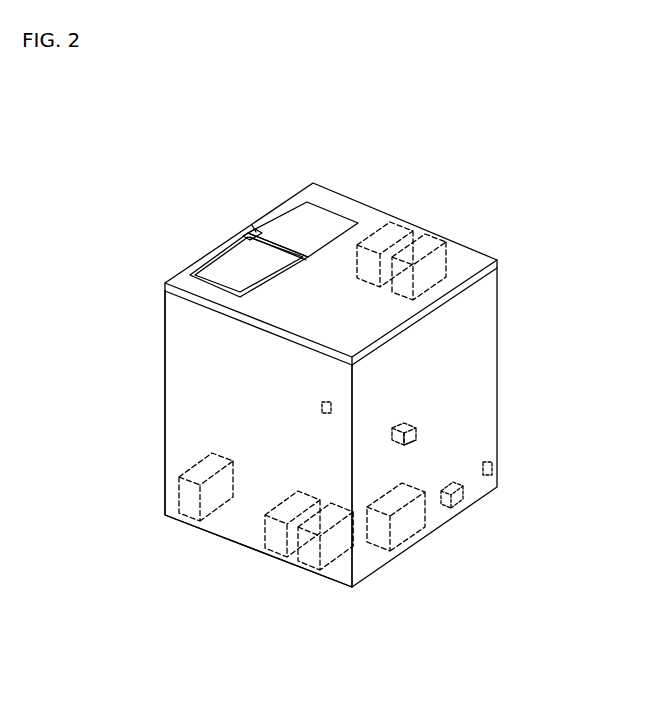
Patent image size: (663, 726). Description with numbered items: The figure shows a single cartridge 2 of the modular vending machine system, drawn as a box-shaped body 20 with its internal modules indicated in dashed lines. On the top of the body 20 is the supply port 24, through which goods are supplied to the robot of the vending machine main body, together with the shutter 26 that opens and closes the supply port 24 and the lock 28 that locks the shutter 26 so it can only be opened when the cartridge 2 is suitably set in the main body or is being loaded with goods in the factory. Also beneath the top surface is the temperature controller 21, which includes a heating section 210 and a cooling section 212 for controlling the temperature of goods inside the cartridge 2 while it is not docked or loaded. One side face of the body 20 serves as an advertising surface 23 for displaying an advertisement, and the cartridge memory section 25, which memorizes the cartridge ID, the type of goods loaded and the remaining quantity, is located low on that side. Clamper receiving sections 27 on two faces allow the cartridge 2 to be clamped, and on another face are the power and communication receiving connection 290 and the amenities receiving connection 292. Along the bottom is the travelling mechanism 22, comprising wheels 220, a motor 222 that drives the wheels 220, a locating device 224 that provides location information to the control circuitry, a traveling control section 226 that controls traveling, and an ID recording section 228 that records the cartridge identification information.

The cartridge 2 is at (174, 155).
The body 20 is at (498, 312).
The temperature controller 21 is at (425, 162).
The heating section 210 is at (397, 222).
The cooling section 212 is at (447, 236).
The travelling mechanism 22 is at (194, 606).
The wheels 220 is at (365, 580).
The motor 222 is at (350, 580).
The locating device 224 is at (307, 570).
The traveling control section 226 is at (278, 553).
The ID recording section 228 is at (457, 507).
The advertising surface 23 is at (200, 375).
The supply port 24 is at (327, 212).
The cartridge memory section 25 is at (179, 497).
The shutter 26 is at (227, 273).
The clamper receiving section 27 is at (322, 407).
The lock 28 is at (230, 238).
The power and communication receiving connection 290 is at (400, 428).
The amenities receiving connection 292 is at (417, 438).